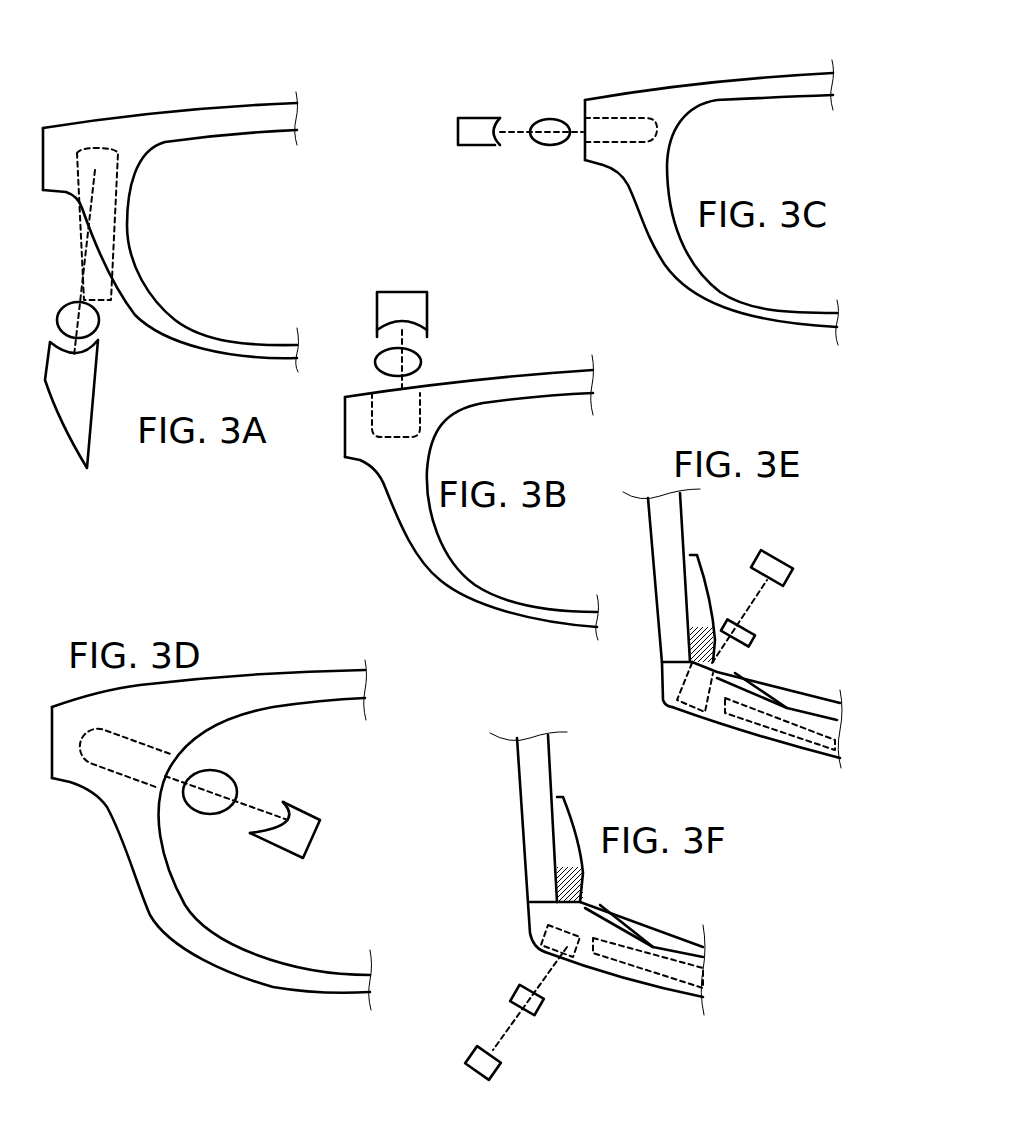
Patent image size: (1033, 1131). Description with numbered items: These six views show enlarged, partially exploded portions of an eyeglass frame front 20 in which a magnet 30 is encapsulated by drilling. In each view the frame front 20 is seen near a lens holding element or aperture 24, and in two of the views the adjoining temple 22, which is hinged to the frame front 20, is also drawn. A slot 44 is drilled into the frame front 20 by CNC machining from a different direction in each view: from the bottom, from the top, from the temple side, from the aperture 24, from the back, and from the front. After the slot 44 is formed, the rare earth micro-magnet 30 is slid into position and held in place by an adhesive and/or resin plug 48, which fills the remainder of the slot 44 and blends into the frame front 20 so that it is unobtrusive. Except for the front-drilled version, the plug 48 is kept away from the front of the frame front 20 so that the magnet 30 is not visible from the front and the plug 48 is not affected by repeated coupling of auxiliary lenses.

In FIG. 3A, the frame front 20 is at (138, 303).
In FIG. 3B, the frame front 20 is at (412, 518).
In FIG. 3C, the frame front 20 is at (632, 177).
In FIG. 3D, the frame front 20 is at (170, 920).
In FIG. 3E, the frame front 20 is at (818, 693).
In FIG. 3F, the frame front 20 is at (683, 937).
In FIG. 3E, the temple 22 is at (668, 563).
In FIG. 3F, the temple 22 is at (533, 803).
In FIG. 3A, the lens holding element 24 is at (167, 147).
In FIG. 3B, the lens holding element 24 is at (483, 408).
In FIG. 3C, the lens holding element 24 is at (730, 107).
In FIG. 3D, the lens holding element 24 is at (203, 730).
In FIG. 3A, the magnet 30 is at (76, 303).
In FIG. 3B, the magnet 30 is at (420, 361).
In FIG. 3C, the magnet 30 is at (549, 128).
In FIG. 3D, the magnet 30 is at (212, 797).
In FIG. 3E, the magnet 30 is at (750, 637).
In FIG. 3F, the magnet 30 is at (528, 996).
In FIG. 3A, the slot 44 is at (80, 187).
In FIG. 3B, the slot 44 is at (378, 408).
In FIG. 3C, the slot 44 is at (587, 134).
In FIG. 3D, the slot 44 is at (123, 757).
In FIG. 3E, the slot 44 is at (698, 697).
In FIG. 3F, the slot 44 is at (565, 938).
In FIG. 3A, the plug 48 is at (80, 403).
In FIG. 3B, the plug 48 is at (408, 303).
In FIG. 3C, the plug 48 is at (473, 132).
In FIG. 3D, the plug 48 is at (298, 827).
In FIG. 3E, the plug 48 is at (782, 574).
In FIG. 3F, the plug 48 is at (492, 1068).